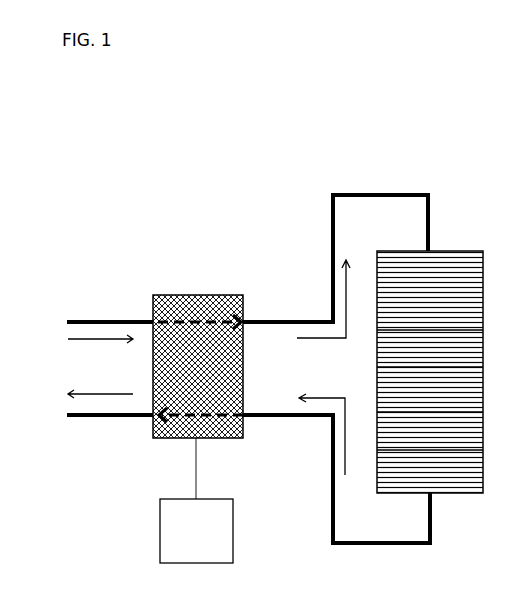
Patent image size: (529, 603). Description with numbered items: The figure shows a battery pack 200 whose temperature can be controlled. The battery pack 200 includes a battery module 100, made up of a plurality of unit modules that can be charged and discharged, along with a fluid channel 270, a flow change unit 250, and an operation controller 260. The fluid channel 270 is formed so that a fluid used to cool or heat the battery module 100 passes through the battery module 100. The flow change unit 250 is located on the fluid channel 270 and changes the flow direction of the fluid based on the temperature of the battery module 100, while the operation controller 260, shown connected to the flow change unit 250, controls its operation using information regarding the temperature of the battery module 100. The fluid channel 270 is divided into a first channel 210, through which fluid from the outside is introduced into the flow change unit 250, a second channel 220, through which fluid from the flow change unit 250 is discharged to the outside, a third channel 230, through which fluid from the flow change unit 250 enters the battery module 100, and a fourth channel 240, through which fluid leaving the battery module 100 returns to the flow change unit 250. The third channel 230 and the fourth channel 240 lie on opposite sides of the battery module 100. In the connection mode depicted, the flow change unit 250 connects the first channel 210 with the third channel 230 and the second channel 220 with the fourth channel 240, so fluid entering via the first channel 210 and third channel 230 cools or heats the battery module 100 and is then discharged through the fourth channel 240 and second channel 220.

The battery module 100 is at (467, 245).
The battery pack 200 is at (61, 164).
The first channel 210 is at (94, 320).
The second channel 220 is at (103, 418).
The third channel 230 is at (277, 320).
The fourth channel 240 is at (283, 418).
The flow change unit 250 is at (207, 290).
The operation controller 260 is at (206, 540).
The fluid channel 270 is at (382, 178).